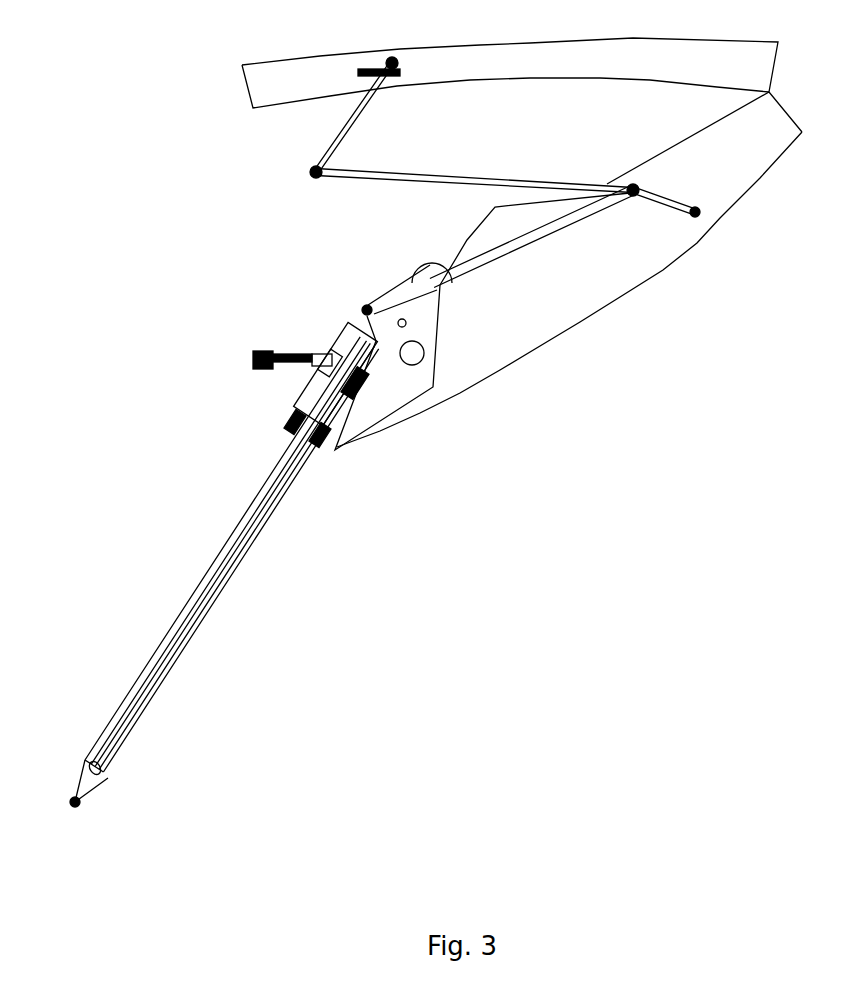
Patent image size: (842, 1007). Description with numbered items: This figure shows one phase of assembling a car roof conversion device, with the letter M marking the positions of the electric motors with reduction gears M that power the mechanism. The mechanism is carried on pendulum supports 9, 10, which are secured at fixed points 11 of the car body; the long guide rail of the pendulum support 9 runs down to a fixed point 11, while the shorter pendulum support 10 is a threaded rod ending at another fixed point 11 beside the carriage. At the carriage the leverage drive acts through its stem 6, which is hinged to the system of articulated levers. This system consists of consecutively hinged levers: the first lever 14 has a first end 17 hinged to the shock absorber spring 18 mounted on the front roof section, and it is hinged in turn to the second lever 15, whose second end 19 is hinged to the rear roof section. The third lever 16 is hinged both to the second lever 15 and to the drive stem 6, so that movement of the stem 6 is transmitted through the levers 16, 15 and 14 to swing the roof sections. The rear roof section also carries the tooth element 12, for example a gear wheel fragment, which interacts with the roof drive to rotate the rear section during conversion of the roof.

The drive stem 6 is at (362, 305).
The pendulum support 9 is at (80, 798).
The pendulum support 10 is at (255, 352).
The fixed points of the car body 11 is at (257, 367).
The tooth element 12 is at (420, 278).
The first lever 14 is at (357, 128).
The second lever 15 is at (550, 185).
The third lever 16 is at (537, 240).
The first end of the first lever 17 is at (400, 70).
The shock absorber spring 18 is at (367, 72).
The second end of the second lever 19 is at (700, 215).
The electric motors with reduction gears M is at (352, 323).